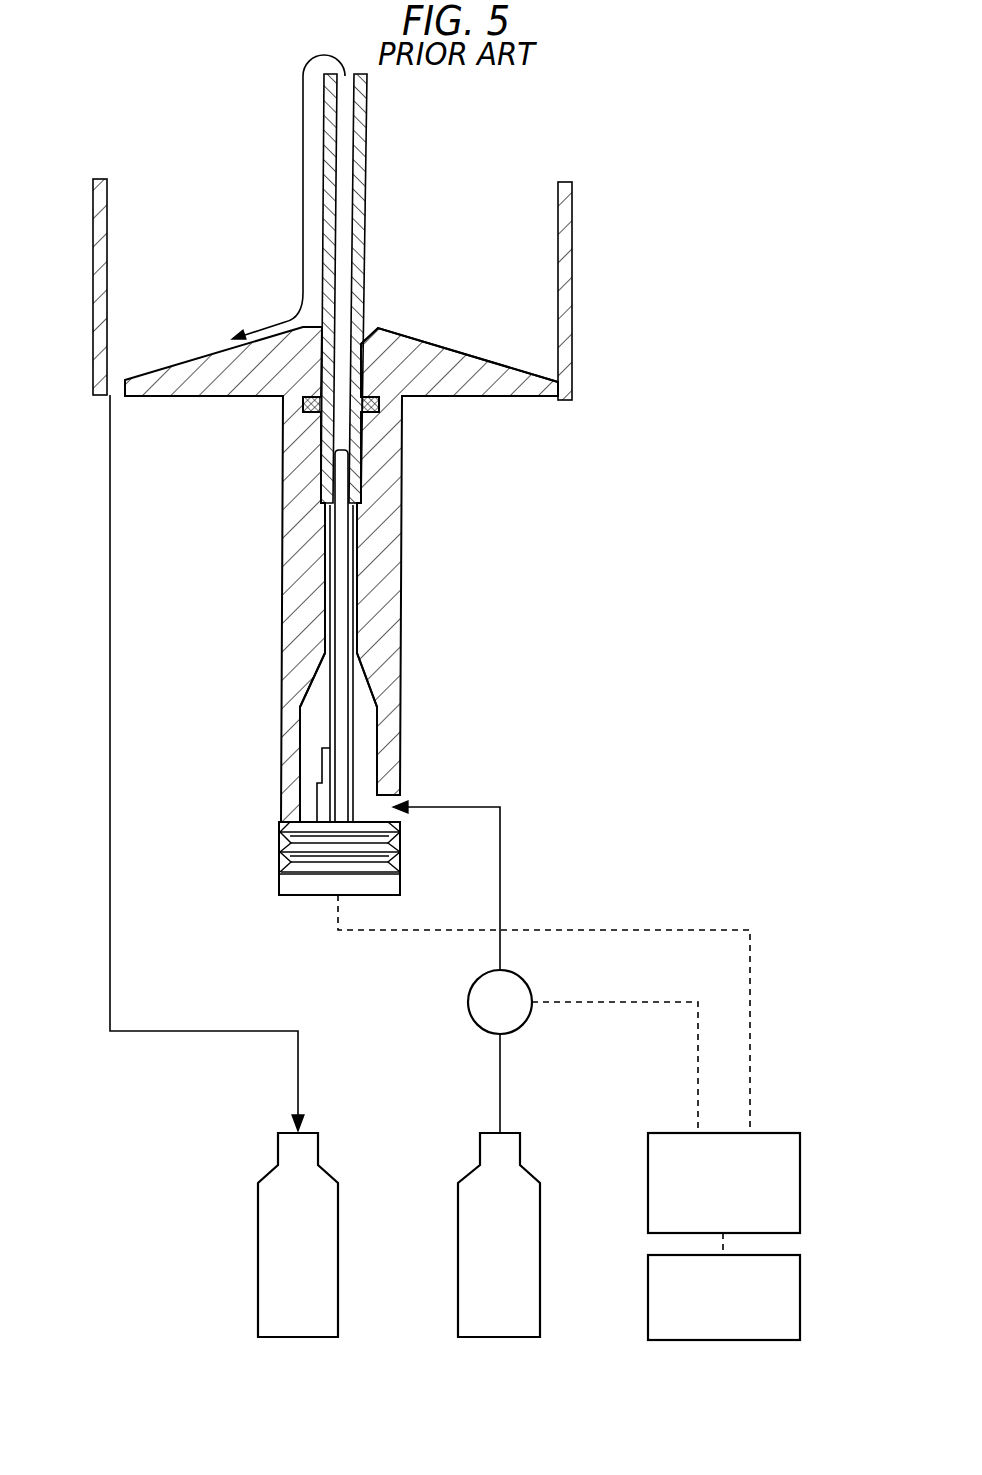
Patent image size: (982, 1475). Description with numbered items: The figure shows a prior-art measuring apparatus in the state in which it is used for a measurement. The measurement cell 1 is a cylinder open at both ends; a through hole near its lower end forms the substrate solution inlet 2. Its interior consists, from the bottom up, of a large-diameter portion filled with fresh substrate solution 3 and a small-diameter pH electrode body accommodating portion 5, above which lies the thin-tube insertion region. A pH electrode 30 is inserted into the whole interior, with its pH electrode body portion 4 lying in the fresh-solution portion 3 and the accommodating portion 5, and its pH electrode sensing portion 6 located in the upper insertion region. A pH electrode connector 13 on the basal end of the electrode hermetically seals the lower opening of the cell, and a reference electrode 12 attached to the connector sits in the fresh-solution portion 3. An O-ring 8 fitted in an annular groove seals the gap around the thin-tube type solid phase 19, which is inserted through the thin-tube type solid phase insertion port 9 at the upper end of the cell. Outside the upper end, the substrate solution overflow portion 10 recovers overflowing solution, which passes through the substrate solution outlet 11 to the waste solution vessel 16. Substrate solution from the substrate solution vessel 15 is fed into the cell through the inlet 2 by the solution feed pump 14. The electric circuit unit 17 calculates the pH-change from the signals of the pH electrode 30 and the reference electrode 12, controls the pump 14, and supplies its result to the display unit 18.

The measurement cell 1 is at (415, 540).
The substrate solution inlet 2 is at (403, 797).
The portion filled with fresh substrate solution 3 is at (361, 712).
The pH electrode body portion 4 is at (343, 638).
The pH electrode body accommodating portion 5 is at (357, 577).
The pH electrode sensing portion 6 is at (363, 478).
The O-ring 8 is at (380, 410).
The thin-tube type solid phase insertion port 9 is at (367, 331).
The substrate solution overflow portion 10 is at (581, 333).
The substrate solution outlet 11 is at (120, 400).
The reference electrode 12 is at (320, 767).
The pH electrode connector 13 is at (279, 887).
The solution feed pump 14 is at (468, 1002).
The substrate solution vessel 15 is at (458, 1262).
The waste solution vessel 16 is at (258, 1262).
The electric circuit unit 17 is at (648, 1185).
The display unit 18 is at (648, 1298).
The thin-tube type solid phase 19 is at (376, 235).
The pH electrode 30 is at (312, 722).